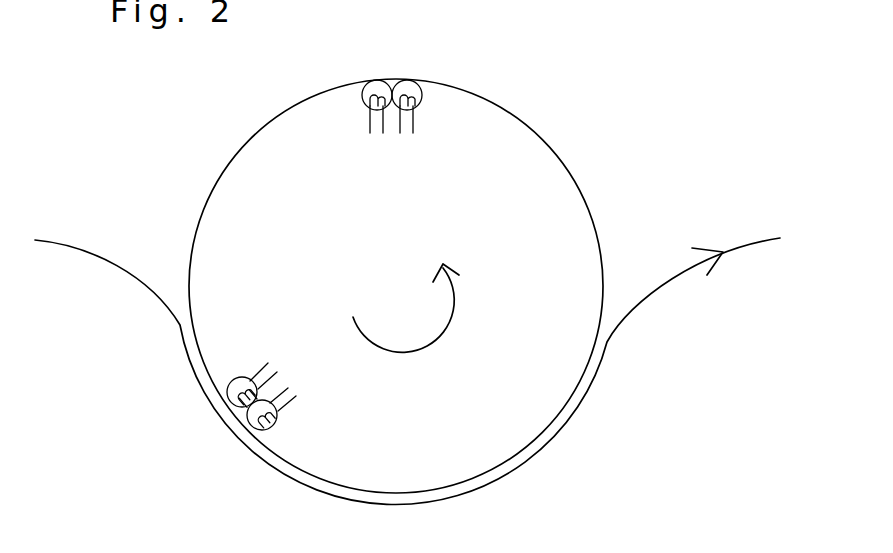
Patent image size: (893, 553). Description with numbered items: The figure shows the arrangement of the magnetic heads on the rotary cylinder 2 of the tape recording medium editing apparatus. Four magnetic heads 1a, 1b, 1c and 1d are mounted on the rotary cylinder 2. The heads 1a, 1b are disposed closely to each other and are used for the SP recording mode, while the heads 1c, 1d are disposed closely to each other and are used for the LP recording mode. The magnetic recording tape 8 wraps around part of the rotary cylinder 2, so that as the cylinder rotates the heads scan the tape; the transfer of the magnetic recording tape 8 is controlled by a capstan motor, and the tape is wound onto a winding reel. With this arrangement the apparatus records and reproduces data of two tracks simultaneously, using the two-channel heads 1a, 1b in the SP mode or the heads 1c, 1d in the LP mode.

The magnetic head 1a is at (299, 403).
The magnetic head 1b is at (276, 374).
The magnetic head 1c is at (367, 127).
The magnetic head 1d is at (419, 127).
The rotary cylinder 2 is at (577, 240).
The magnetic recording tape 8 is at (648, 295).